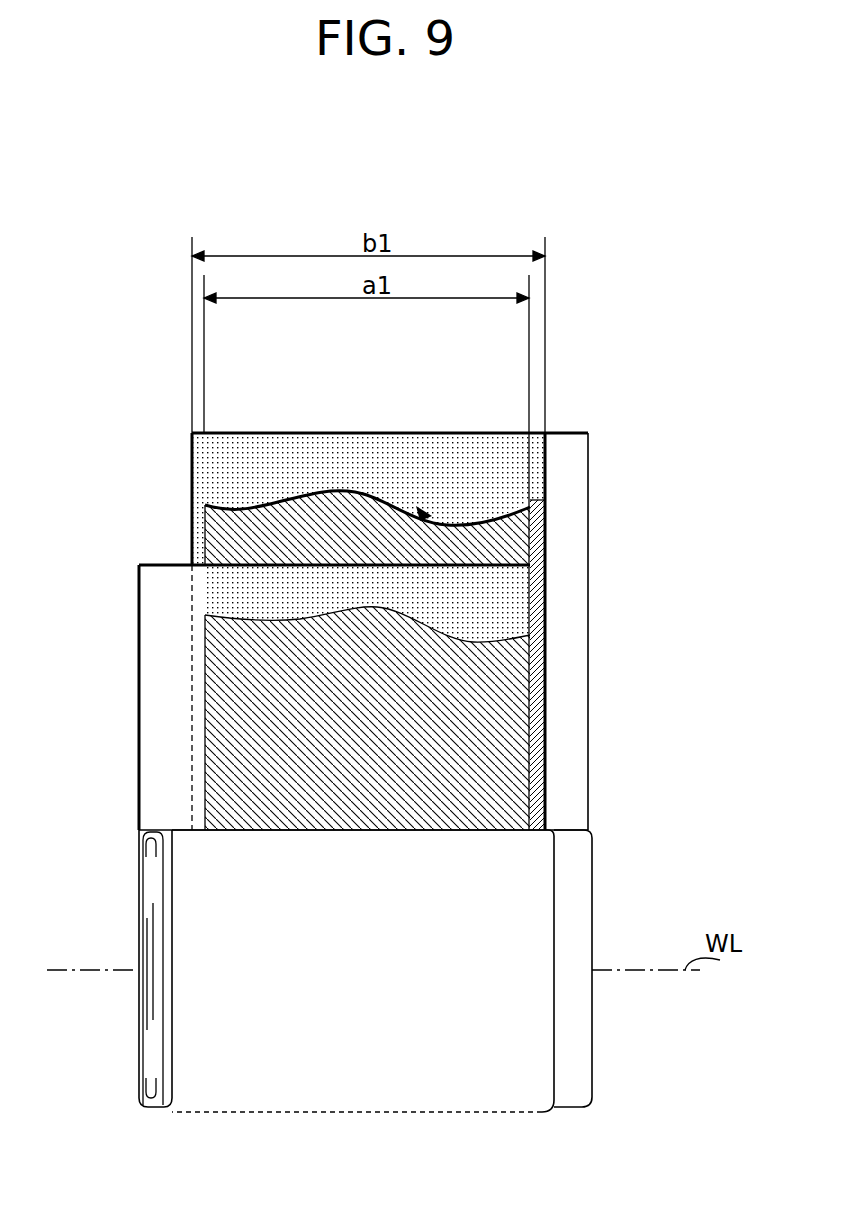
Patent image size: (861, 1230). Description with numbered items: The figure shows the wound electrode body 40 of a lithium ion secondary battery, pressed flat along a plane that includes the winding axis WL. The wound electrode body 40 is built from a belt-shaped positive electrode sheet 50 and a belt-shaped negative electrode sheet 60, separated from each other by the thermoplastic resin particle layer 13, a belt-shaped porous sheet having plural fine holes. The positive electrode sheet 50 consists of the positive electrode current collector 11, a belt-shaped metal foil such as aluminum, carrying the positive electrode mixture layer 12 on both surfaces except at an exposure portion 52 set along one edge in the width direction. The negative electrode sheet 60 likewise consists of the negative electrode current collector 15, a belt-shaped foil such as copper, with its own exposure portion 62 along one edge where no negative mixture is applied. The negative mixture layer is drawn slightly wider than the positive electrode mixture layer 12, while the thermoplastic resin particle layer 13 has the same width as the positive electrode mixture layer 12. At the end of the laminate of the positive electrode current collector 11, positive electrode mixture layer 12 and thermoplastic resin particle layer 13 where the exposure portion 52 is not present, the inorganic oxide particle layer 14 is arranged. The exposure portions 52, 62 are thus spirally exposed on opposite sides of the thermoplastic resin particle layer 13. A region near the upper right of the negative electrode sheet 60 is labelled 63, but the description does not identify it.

The positive electrode current collector 11 is at (352, 566).
The positive electrode mixture layer 12 is at (226, 593).
The thermoplastic resin particle layer 13 is at (230, 536).
The inorganic oxide particle layer 14 is at (537, 650).
The negative electrode current collector 15 is at (356, 433).
The wound electrode body 40 is at (452, 1096).
The positive electrode sheet 50 is at (140, 587).
The exposure portion 52 is at (157, 782).
The negative electrode sheet 60 is at (589, 465).
The exposure portion 62 is at (575, 537).
The gap 63 is at (511, 456).